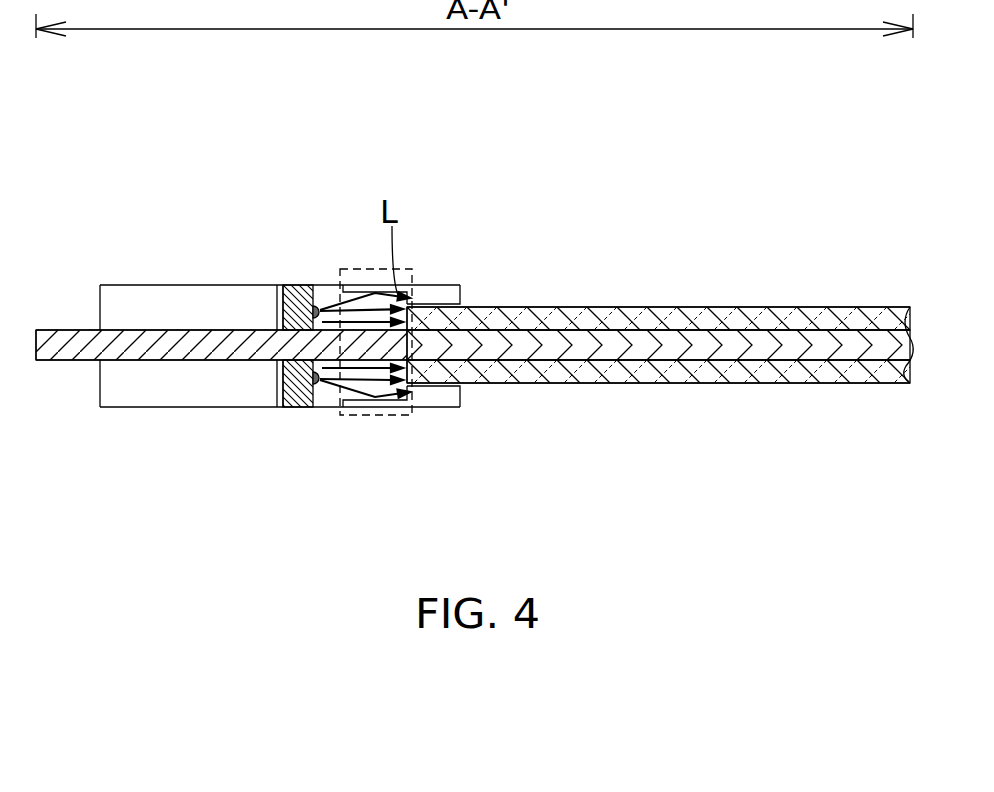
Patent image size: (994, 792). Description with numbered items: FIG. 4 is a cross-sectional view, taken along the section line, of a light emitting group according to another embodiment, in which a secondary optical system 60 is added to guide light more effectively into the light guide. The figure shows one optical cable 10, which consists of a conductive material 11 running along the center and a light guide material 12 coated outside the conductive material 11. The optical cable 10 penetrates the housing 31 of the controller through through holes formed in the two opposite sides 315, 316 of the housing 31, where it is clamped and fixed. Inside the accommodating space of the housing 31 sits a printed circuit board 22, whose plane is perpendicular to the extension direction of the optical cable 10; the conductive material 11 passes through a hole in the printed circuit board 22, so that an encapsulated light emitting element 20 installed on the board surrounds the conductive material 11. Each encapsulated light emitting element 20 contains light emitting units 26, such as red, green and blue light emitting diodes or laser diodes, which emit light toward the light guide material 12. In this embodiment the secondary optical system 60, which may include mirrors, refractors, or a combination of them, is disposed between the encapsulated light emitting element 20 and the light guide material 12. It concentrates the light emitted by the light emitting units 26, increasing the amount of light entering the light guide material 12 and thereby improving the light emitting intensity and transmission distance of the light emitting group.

The optical cable 10 is at (718, 121).
The conductive material 11 is at (654, 340).
The light guide material 12 is at (712, 317).
The encapsulated light emitting element 20 is at (300, 293).
The printed circuit board 22 is at (277, 305).
The light emitting unit 26 is at (319, 308).
The housing 31 is at (435, 285).
The side of the housing 315 is at (461, 296).
The side of the housing 316 is at (100, 307).
The secondary optical system 60 is at (375, 417).